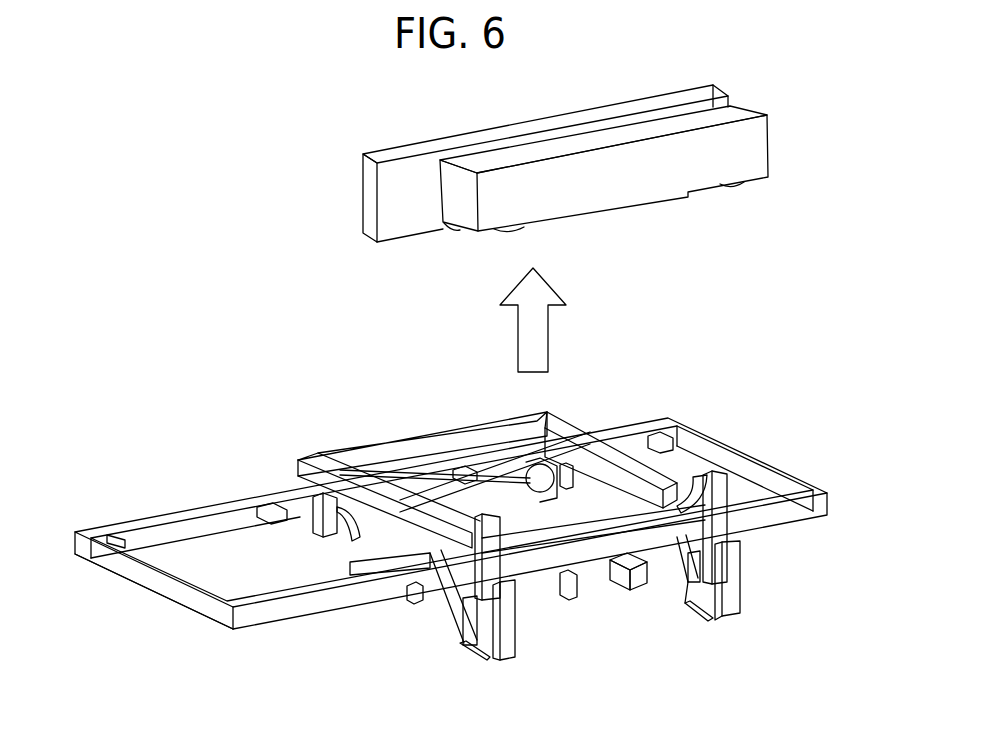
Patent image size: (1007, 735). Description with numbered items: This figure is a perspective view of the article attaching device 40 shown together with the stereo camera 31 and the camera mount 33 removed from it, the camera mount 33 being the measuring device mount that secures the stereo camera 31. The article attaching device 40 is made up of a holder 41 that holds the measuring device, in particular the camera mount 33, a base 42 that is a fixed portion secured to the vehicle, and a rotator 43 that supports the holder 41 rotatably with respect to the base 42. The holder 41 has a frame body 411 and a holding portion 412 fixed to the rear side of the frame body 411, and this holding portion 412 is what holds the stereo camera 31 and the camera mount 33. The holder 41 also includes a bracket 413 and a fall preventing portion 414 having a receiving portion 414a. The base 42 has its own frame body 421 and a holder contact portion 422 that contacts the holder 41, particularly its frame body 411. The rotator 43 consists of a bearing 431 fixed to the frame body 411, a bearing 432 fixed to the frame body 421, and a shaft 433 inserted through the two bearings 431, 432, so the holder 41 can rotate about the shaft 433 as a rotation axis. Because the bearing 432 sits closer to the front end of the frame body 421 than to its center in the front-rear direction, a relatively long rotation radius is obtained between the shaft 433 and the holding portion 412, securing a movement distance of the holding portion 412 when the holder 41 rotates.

The stereo camera 31 is at (681, 167).
The camera mount 33 is at (400, 175).
The article attaching device 40 is at (337, 345).
The holder 41 is at (502, 445).
The base 42 is at (451, 545).
The rotator 43 is at (405, 476).
The frame body 411 is at (473, 432).
The holding portion 412 is at (591, 599).
The bracket 413 is at (487, 622).
The fall preventing portion 414 is at (465, 630).
The receiving portion 414a is at (520, 635).
The frame body 421 is at (152, 583).
The holder contact portion 422 is at (620, 553).
The bearing 431 is at (312, 522).
The bearing 432 is at (345, 537).
The shaft 433 is at (452, 490).